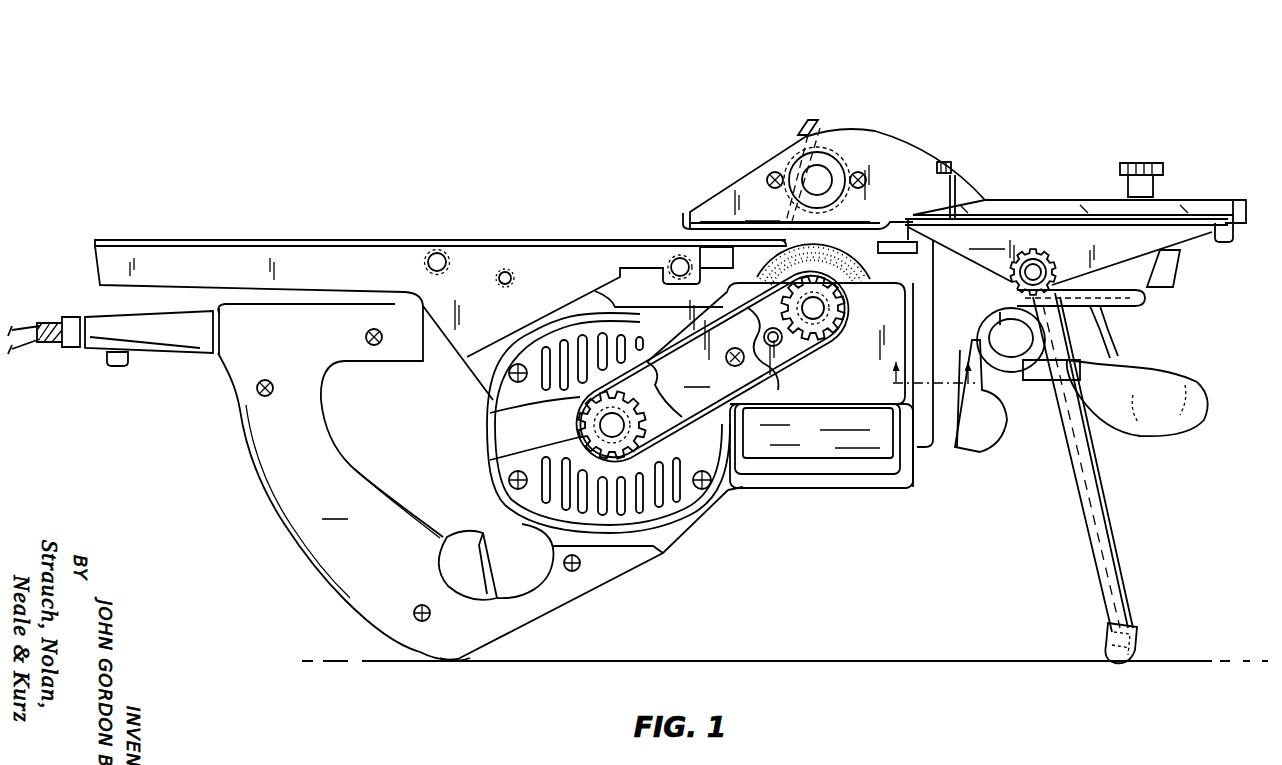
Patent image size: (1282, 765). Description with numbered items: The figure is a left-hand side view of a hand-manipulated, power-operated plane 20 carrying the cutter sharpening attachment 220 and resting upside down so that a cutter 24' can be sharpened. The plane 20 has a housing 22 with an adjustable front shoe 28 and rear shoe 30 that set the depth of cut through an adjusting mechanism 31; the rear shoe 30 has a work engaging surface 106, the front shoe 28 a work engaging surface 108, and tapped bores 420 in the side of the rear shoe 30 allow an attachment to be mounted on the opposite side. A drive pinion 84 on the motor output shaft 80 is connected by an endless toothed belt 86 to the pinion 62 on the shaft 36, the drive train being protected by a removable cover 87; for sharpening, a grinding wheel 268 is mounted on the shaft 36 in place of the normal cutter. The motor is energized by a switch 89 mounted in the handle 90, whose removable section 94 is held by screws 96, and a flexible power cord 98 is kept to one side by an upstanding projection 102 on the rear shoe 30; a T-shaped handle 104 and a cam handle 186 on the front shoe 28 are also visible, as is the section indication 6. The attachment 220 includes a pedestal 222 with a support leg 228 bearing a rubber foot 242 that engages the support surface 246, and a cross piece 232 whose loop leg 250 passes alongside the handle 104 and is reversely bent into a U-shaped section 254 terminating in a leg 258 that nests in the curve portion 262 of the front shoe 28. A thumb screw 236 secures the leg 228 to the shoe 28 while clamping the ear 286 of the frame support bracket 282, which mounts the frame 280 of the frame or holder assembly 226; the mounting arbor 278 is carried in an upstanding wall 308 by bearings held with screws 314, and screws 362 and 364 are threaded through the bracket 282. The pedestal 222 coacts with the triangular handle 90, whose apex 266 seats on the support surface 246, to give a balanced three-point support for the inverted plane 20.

The section line 6- 6 is at (930, 391).
The plane 20 is at (849, 499).
The housing 22 is at (738, 490).
The cutter 24' is at (802, 152).
The front shoe 28 is at (1180, 272).
The rear shoe 30 is at (489, 238).
The adjusting mechanism 31 is at (990, 458).
The shaft 36 is at (827, 315).
The pinion 62 is at (785, 340).
The motor output shaft 80 is at (600, 430).
The drive pinion 84 is at (560, 440).
The toothed belt 86 is at (492, 410).
The cover 87 is at (776, 350).
The switch 89 is at (490, 567).
The handle 90 is at (385, 482).
The handle section 94 is at (473, 482).
The screws 96 is at (268, 398).
The power cord 98 is at (174, 353).
The projection 102 is at (117, 366).
The T-shaped handle 104 is at (1178, 432).
The work engaging surface 106 is at (588, 240).
The work engaging surface 108 is at (895, 243).
The handle 186 is at (968, 452).
The cutter sharpening attachment 220 is at (932, 132).
The pedestal 222 is at (1114, 530).
The frame or holder assembly 226 is at (712, 192).
The support leg 228 is at (1098, 558).
The cross piece 232 is at (1152, 298).
The thumb screw 236 is at (1052, 266).
The foot 242 is at (1141, 638).
The support surface 246 is at (840, 661).
The leg 250 is at (1118, 310).
The U-shaped section 254 is at (985, 322).
The leg 258 is at (1120, 358).
The curve portion 262 is at (1010, 325).
The apex 266 is at (462, 663).
The grinding wheel 268 is at (842, 238).
The mounting arbor 278 is at (822, 165).
The frame 280 is at (1215, 200).
The frame support bracket 282 is at (1232, 235).
The ear 286 is at (1060, 252).
The upstanding wall 308 is at (785, 210).
The screws 314 is at (770, 173).
The screw 362 is at (1138, 165).
The screw 364 is at (952, 166).
The tapped bores 420 is at (437, 255).